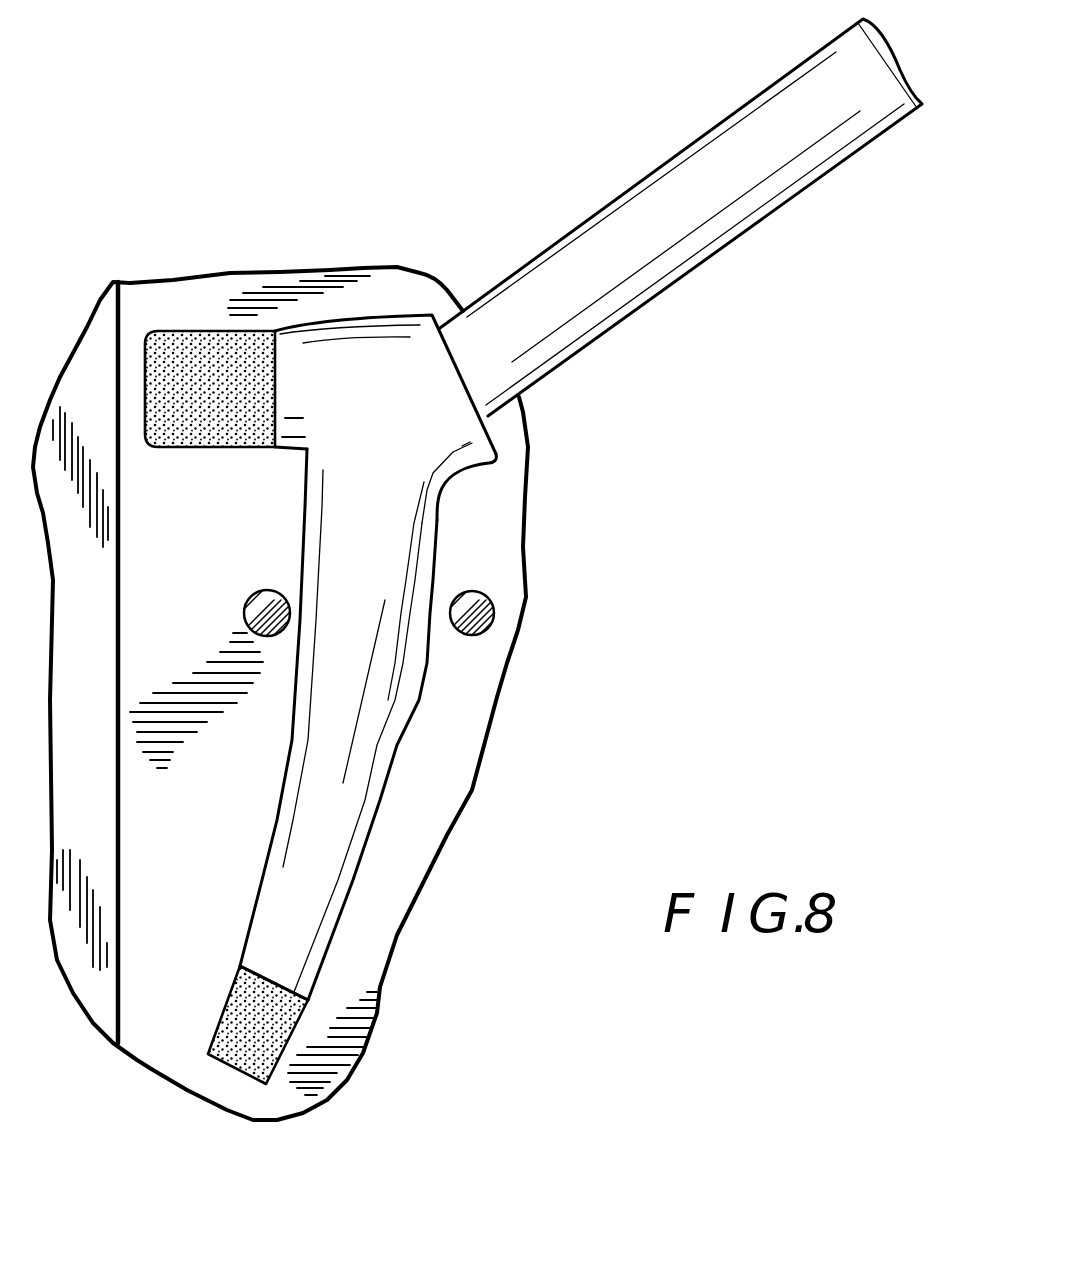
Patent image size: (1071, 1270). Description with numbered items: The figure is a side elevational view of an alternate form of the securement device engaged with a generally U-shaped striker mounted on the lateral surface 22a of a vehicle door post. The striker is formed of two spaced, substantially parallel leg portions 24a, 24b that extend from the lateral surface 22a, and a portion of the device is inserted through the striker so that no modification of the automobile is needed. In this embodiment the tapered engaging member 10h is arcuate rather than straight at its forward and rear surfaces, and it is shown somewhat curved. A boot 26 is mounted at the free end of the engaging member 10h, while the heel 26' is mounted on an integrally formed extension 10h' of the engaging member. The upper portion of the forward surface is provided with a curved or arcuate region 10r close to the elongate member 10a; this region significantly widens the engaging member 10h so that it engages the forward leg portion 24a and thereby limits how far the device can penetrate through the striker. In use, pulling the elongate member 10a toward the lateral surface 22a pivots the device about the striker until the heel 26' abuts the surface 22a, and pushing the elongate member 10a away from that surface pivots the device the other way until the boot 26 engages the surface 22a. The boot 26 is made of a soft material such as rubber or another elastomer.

The elongate member 10a is at (819, 158).
The extension 10h' is at (385, 334).
The engaging member 10h is at (394, 724).
The arcuate region 10r is at (478, 463).
The lateral surface 22a is at (122, 962).
The forward leg portion 24a is at (480, 613).
The leg portion 24b is at (267, 613).
The boot 26 is at (332, 1025).
The heel 26' is at (210, 331).